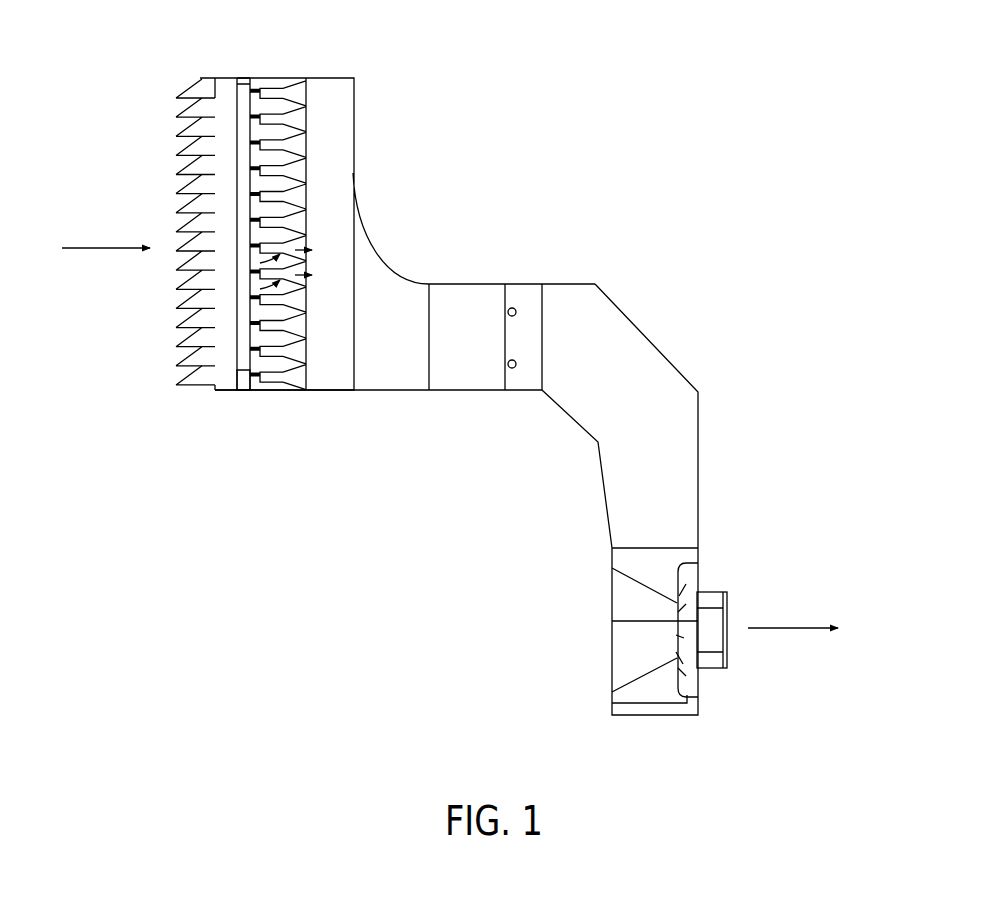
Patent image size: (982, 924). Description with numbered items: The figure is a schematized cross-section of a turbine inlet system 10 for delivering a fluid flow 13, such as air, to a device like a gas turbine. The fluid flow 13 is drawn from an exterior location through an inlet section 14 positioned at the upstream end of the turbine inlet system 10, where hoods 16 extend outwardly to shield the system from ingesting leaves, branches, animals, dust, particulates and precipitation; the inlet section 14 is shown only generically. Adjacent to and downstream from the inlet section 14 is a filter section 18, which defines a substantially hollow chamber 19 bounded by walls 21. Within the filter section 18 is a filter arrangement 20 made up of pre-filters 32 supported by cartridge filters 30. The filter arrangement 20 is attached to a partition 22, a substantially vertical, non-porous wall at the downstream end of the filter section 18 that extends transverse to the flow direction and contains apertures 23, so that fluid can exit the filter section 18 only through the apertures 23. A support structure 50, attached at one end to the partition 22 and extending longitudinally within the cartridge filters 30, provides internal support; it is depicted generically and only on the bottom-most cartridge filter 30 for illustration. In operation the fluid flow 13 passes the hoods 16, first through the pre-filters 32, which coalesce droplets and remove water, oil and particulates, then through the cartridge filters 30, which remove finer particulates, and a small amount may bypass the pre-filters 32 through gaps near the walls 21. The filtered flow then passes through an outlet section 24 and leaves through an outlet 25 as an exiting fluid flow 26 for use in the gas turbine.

The turbine inlet system 10 is at (559, 99).
The fluid flow 13 is at (108, 246).
The inlet section 14 is at (195, 404).
The hoods 16 is at (193, 88).
The filter section 18 is at (255, 404).
The chamber 19 is at (250, 90).
The filter arrangement 20 is at (291, 64).
The walls 21 is at (241, 79).
The partition 22 is at (308, 368).
The apertures 23 is at (309, 90).
The outlet section 24 is at (470, 407).
The outlet 25 is at (740, 657).
The exiting fluid flow 26 is at (786, 628).
The cartridge filters 30 is at (273, 387).
The pre-filters 32 is at (247, 384).
The support structure 50 is at (298, 386).